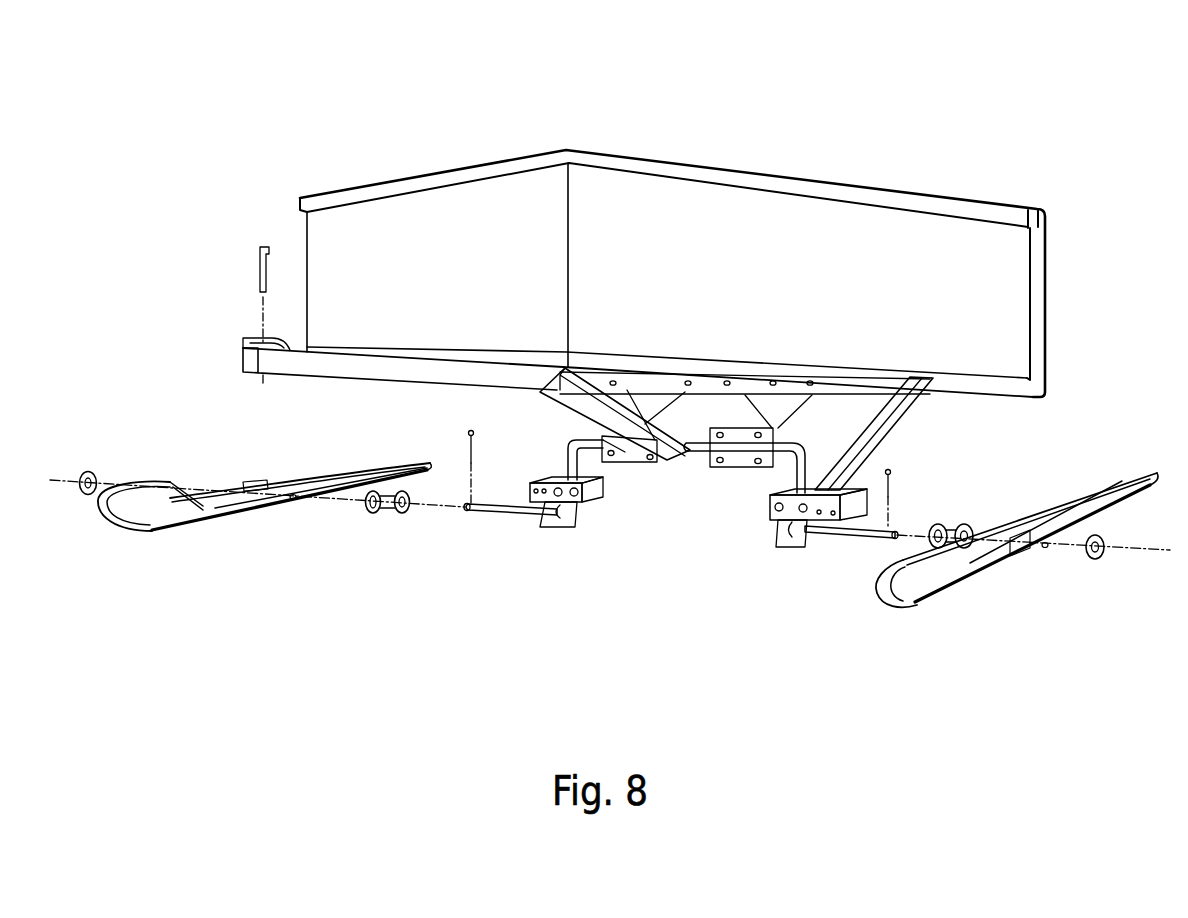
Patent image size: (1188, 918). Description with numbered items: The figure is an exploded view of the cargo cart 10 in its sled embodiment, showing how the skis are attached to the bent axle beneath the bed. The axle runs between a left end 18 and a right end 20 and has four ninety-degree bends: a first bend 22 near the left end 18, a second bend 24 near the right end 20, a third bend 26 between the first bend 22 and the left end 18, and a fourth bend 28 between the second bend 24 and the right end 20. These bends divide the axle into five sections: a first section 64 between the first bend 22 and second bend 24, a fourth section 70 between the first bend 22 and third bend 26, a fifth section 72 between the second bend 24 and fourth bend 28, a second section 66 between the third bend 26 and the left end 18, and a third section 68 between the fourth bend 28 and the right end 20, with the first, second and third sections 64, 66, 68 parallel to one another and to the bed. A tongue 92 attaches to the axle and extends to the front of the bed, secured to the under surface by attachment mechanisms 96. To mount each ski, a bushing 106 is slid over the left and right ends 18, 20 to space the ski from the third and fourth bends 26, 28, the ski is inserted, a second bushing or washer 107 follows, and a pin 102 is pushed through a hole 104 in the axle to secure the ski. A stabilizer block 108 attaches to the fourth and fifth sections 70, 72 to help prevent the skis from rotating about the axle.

The cargo cart 10 is at (790, 103).
The tongue 92 is at (297, 340).
The attachment mechanism 96 is at (258, 263).
The first bend 22 is at (567, 437).
The fourth section 70 is at (568, 447).
The first section 64 is at (700, 450).
The second bend 24 is at (773, 466).
The fifth section 72 is at (813, 467).
The third bend 26 is at (568, 505).
The fourth bend 28 is at (785, 530).
The stabilizer block 108 is at (602, 500).
The left end 18 is at (465, 509).
The right end 20 is at (902, 531).
The second section 66 is at (490, 515).
The third section 68 is at (842, 536).
The hole 104 is at (467, 510).
The pin 102 is at (468, 434).
The bushing 106 is at (380, 512).
The second bushing or washer 107 is at (90, 472).